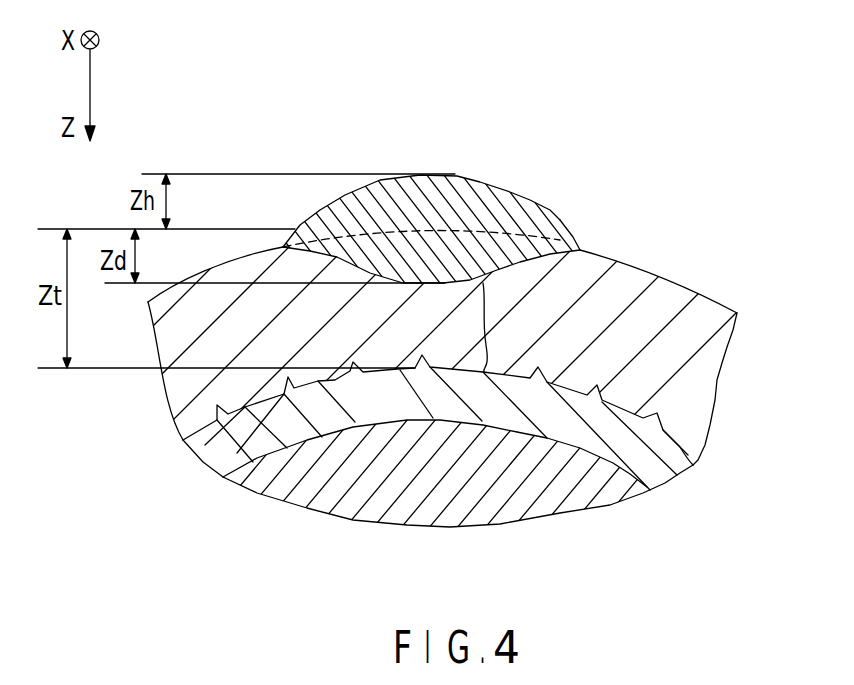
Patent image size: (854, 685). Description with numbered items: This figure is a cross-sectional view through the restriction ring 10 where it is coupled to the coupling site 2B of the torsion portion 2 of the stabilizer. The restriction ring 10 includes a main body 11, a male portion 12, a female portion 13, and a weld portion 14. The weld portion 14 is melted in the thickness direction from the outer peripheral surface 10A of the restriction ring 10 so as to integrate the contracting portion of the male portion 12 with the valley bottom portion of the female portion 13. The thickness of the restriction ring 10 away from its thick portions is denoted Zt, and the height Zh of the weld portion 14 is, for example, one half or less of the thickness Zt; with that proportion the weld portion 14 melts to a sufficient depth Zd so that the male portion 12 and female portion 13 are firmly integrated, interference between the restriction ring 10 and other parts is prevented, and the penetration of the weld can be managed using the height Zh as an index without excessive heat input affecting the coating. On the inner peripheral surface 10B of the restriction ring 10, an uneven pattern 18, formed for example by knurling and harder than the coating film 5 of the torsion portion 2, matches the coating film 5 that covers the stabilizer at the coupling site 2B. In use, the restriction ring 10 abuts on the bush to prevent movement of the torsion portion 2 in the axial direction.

The restriction ring 10 is at (427, 355).
The outer peripheral surface 10A is at (708, 297).
The inner peripheral surface 10B is at (695, 465).
The main body 11 is at (662, 292).
The male portion 12 is at (553, 222).
The female portion 13 is at (452, 245).
The weld portion 14 is at (497, 203).
The uneven pattern 18 is at (222, 423).
The coating film 5 is at (663, 477).
The coupling site 2B is at (438, 501).
The torsion portion 2 is at (578, 503).